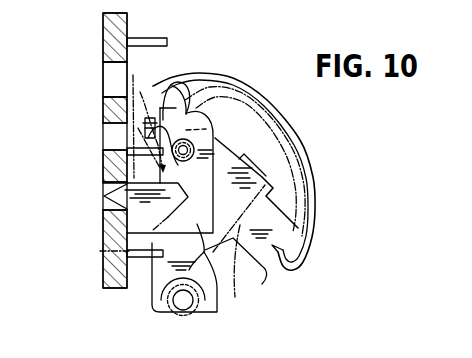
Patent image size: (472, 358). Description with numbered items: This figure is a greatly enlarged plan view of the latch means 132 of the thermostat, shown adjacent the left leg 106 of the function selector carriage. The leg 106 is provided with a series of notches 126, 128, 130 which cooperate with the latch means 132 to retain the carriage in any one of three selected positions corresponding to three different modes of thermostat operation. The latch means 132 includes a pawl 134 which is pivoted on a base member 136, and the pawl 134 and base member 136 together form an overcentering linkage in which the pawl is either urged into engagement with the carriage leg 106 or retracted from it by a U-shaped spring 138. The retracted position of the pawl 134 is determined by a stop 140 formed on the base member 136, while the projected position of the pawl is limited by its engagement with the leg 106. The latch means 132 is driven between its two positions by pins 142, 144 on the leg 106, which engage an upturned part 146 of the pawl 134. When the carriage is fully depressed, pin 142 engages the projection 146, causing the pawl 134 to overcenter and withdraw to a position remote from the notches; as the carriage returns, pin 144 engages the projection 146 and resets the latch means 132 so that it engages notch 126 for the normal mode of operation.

The left leg 106 is at (105, 108).
The notch 130 is at (106, 72).
The notch 128 is at (110, 124).
The pin 144 is at (139, 258).
The notch 126 is at (110, 208).
The pin 142 is at (150, 38).
The U-shaped spring 138 is at (294, 121).
The latch means 132 is at (247, 70).
The stop 140 is at (270, 177).
The upturned part 146 is at (168, 168).
The base member 136 is at (264, 285).
The pawl 134 is at (222, 295).